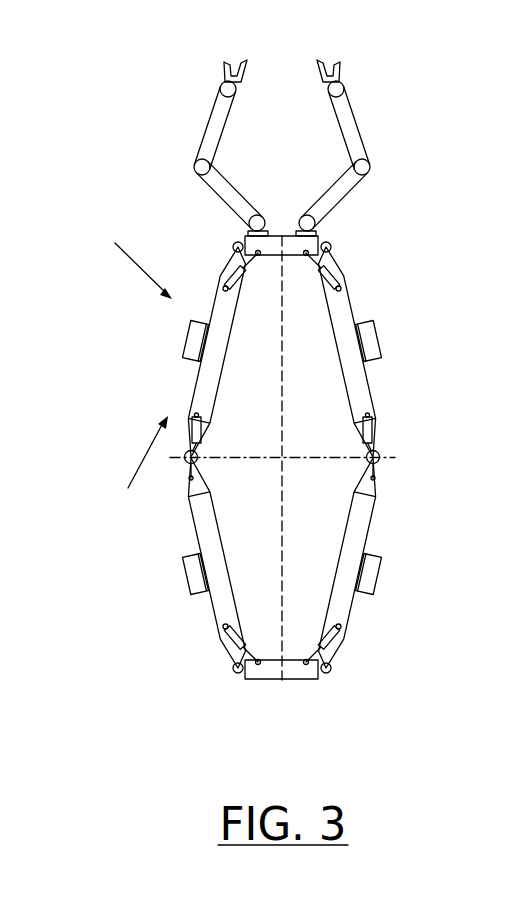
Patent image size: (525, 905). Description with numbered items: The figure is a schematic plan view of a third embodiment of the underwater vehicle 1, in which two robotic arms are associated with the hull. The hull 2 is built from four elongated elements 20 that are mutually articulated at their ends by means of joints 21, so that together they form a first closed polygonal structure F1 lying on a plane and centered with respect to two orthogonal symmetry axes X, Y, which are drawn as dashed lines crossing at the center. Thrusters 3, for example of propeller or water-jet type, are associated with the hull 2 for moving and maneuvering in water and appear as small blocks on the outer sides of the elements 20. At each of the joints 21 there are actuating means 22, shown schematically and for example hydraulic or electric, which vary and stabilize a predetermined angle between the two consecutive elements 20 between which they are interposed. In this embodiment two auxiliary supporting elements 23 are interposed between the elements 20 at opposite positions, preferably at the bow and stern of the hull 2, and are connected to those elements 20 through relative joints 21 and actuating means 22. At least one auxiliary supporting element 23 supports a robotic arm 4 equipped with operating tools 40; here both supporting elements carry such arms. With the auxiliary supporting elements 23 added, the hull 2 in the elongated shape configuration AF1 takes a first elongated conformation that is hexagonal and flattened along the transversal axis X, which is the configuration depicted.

The underwater vehicle 1 is at (432, 228).
The hull 2 is at (370, 645).
The thrusters 3 is at (367, 333).
The robotic arm 4 is at (210, 134).
The elongated elements 20 is at (205, 390).
The joints 21 is at (233, 244).
The actuating means 22 is at (342, 273).
The auxiliary supporting elements 23 is at (291, 240).
The operating tools 40 is at (222, 74).
The transversal symmetry axis X is at (299, 465).
The longitudinal symmetry axis Y is at (282, 412).
The elongated shape configuration AF1 is at (128, 259).
The first closed polygonal structure F1 is at (133, 467).